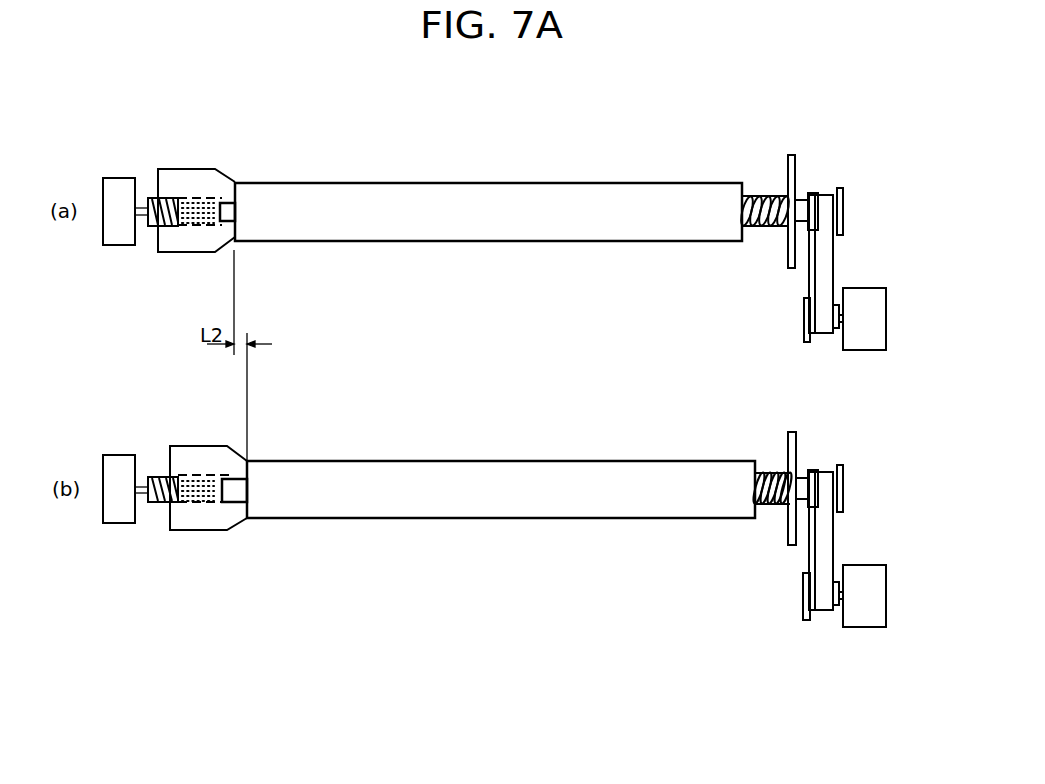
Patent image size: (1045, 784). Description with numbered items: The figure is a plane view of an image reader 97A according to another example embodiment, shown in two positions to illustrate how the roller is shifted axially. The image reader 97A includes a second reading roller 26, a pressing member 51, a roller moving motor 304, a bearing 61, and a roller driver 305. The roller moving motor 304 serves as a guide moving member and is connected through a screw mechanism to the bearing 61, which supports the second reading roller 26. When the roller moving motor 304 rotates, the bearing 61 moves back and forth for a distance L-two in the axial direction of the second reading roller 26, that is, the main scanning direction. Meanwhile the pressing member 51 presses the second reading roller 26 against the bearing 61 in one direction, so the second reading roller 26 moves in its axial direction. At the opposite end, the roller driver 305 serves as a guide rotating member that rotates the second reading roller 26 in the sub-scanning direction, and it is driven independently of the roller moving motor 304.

The roller moving motor 304 is at (118, 178).
The bearing 61 is at (190, 169).
The second reading roller 26 is at (456, 242).
The pressing member 51 is at (758, 195).
The image reader 97A is at (640, 156).
The roller driver 305 is at (887, 317).